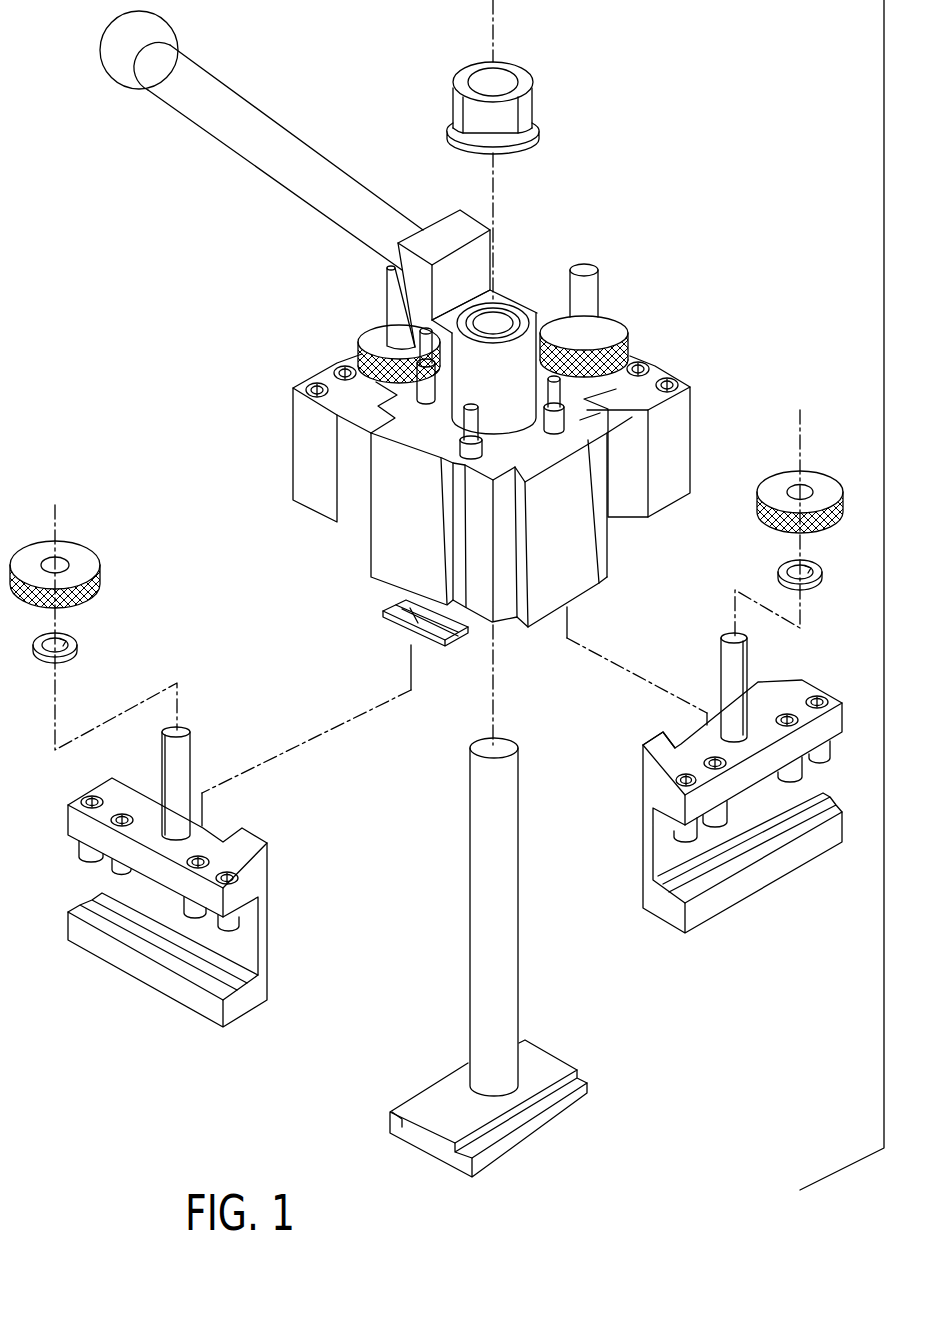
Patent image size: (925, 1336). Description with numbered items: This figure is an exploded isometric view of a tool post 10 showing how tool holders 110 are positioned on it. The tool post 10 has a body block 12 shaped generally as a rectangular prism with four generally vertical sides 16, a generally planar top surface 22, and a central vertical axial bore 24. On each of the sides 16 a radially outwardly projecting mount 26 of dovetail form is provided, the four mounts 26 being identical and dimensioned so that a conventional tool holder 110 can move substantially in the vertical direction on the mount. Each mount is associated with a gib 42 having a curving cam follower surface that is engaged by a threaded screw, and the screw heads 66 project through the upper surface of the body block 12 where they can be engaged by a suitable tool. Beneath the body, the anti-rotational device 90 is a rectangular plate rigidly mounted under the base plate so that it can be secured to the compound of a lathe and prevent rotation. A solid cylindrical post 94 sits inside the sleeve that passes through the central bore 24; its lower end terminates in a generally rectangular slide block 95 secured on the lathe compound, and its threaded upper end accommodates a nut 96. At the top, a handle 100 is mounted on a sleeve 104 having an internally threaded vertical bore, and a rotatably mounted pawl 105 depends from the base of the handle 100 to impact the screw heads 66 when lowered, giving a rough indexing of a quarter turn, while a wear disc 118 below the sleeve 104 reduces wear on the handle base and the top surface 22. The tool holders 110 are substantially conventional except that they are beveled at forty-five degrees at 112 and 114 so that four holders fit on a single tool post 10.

The tool post 10 is at (190, 335).
The body block 12 is at (352, 362).
The vertical sides 16 is at (384, 538).
The top surface 22 is at (613, 388).
The central vertical axial bore 24 is at (506, 318).
The mount 26 is at (363, 568).
The gib 42 is at (612, 530).
The screw heads 66 is at (403, 340).
The anti-rotational device 90 is at (397, 640).
The cylindrical post 94 is at (507, 907).
The slide block 95 is at (592, 1085).
The nut 96 is at (537, 118).
The handle 100 is at (232, 87).
The sleeve 104 is at (543, 310).
The pawl 105 is at (402, 306).
The tool holders 110 is at (290, 388).
The bevel 112 is at (777, 682).
The bevel 114 is at (640, 764).
The wear disc 118 is at (530, 442).